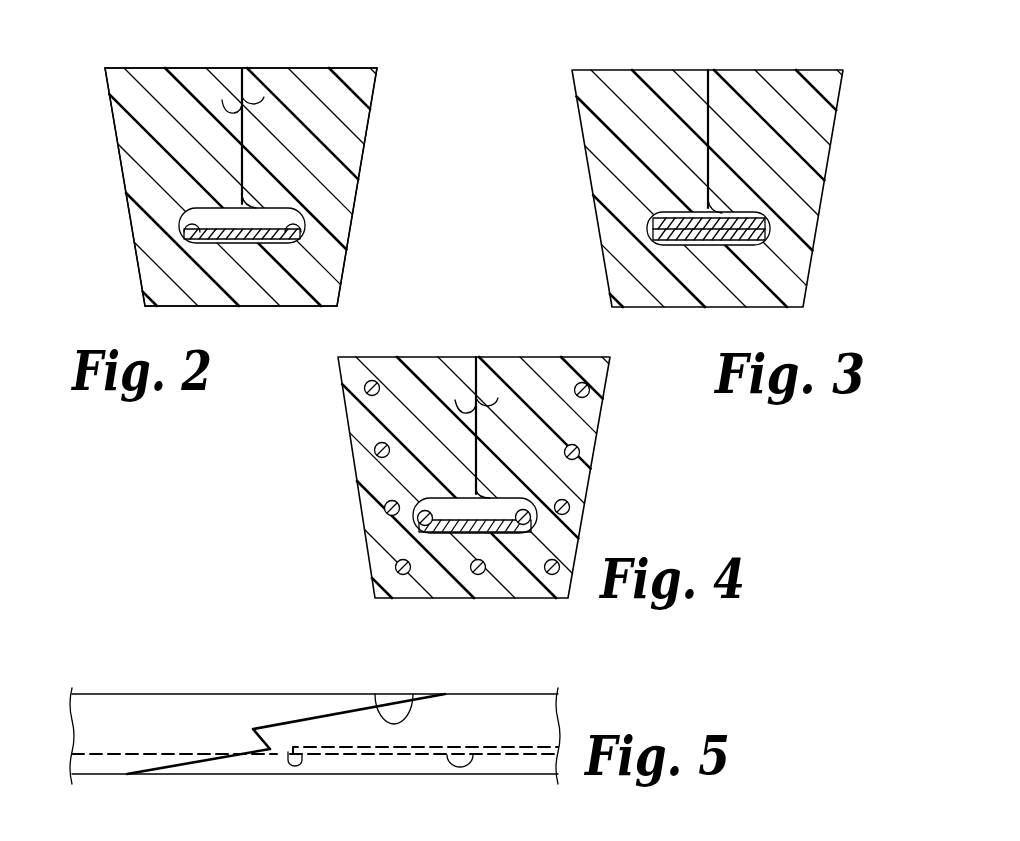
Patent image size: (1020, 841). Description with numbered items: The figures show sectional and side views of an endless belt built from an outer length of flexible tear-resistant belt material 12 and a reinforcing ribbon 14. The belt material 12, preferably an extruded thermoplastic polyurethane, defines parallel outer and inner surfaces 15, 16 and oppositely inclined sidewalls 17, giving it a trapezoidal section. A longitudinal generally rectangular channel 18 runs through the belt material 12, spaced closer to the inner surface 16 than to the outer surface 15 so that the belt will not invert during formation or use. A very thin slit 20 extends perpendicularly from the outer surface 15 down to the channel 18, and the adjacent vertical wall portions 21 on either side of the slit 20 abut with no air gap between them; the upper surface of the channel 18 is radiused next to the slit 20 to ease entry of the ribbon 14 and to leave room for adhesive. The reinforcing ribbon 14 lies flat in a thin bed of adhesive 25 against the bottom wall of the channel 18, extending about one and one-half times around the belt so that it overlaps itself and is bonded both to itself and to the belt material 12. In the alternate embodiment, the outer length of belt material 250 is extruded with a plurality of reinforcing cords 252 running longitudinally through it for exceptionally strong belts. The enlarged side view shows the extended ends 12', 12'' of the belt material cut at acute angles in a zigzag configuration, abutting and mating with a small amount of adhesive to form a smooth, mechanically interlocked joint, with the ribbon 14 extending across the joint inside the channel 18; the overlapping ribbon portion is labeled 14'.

In FIG. 2, the outer length of flexible tear-resistant belt material 12 is at (275, 174).
In FIG. 3, the outer length of flexible tear-resistant belt material 12 is at (738, 167).
In FIG. 5, the outer length of flexible tear-resistant belt material 12 is at (356, 724).
In FIG. 2, the reinforcing ribbon 14 is at (293, 212).
In FIG. 3, the reinforcing ribbon 14 is at (766, 209).
In FIG. 4, the reinforcing ribbon 14 is at (418, 527).
In FIG. 5, the reinforcing ribbon 14 is at (315, 706).
In FIG. 2, the outer surface 15 is at (340, 67).
In FIG. 2, the inner surface 16 is at (235, 306).
In FIG. 2, the oppositely inclined sidewalls 17 is at (377, 125).
In FIG. 2, the longitudinal generally rectangular channel 18 is at (253, 210).
In FIG. 3, the longitudinal generally rectangular channel 18 is at (710, 213).
In FIG. 4, the longitudinal generally rectangular channel 18 is at (498, 509).
In FIG. 2, the slit 20 is at (242, 68).
In FIG. 3, the slit 20 is at (708, 70).
In FIG. 4, the slit 20 is at (477, 357).
In FIG. 2, the adjacent vertical wall portions 21 is at (227, 100).
In FIG. 4, the adjacent vertical wall portions 21 is at (462, 410).
In FIG. 2, the adhesive 25 is at (258, 245).
In FIG. 3, the adhesive 25 is at (788, 236).
In FIG. 4, the adhesive 25 is at (540, 537).
In FIG. 4, the outer length of belt material 250 is at (608, 377).
In FIG. 4, the reinforcing cords 252 is at (378, 450).
In FIG. 5, the insert notch 14' is at (407, 704).
In FIG. 5, the extended end 12' is at (422, 685).
In FIG. 5, the extended end 12'' is at (286, 716).